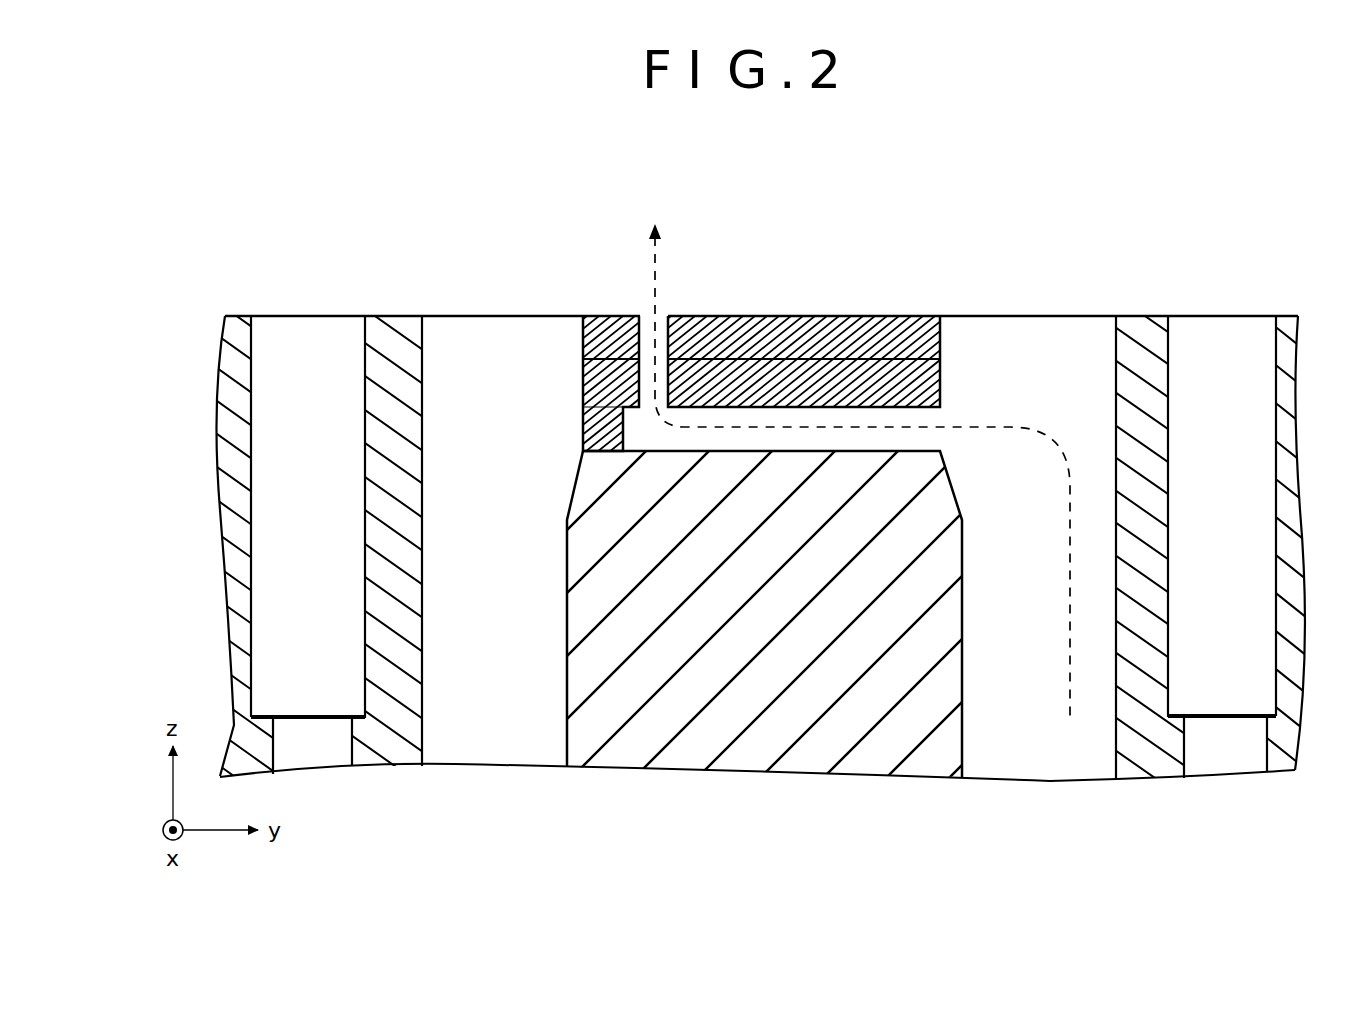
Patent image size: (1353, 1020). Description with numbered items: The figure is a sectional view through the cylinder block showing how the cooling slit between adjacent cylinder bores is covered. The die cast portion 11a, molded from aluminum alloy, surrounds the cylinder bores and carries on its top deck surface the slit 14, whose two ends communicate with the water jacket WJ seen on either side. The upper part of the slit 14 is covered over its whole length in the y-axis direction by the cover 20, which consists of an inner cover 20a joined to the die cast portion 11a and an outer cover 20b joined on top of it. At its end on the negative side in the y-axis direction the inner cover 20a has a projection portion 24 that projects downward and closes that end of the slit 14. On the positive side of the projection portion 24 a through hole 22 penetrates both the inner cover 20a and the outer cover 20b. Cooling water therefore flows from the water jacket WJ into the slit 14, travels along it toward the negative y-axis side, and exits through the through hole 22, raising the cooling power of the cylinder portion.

The die cast portion 11a is at (738, 764).
The slit 14 is at (926, 436).
The cover 20 is at (760, 384).
The inner cover 20a is at (940, 381).
The outer cover 20b is at (940, 343).
The through hole 22 is at (666, 297).
The projection portion 24 is at (583, 441).
The water jacket WJ is at (494, 728).